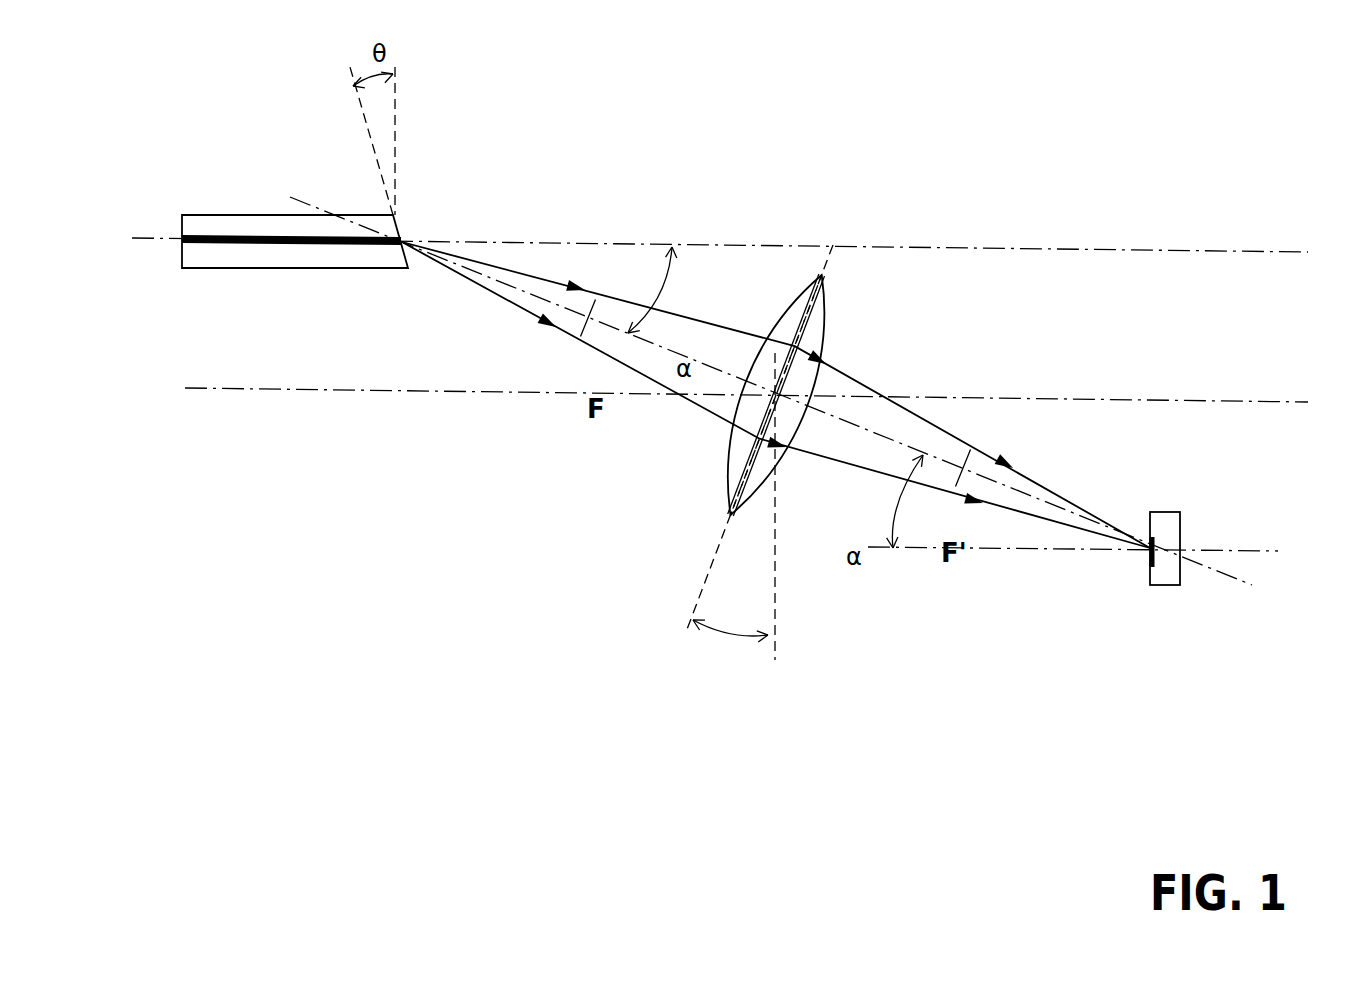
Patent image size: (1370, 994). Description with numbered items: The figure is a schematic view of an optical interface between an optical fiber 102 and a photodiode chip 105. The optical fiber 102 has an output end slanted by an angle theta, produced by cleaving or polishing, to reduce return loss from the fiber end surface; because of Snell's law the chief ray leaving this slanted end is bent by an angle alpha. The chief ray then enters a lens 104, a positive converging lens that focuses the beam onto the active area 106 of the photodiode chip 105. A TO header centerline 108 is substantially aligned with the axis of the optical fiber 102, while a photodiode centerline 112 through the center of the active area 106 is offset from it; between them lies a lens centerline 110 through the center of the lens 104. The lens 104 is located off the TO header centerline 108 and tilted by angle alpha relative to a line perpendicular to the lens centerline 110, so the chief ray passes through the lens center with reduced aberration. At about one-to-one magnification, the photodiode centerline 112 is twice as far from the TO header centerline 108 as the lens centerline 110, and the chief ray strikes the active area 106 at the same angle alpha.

The optical fiber 102 is at (230, 213).
The lens 104 is at (827, 322).
The photodiode chip 105 is at (1162, 587).
The active area 106 is at (1143, 555).
The TO header centerline 108 is at (1258, 250).
The lens centerline 110 is at (1258, 400).
The photodiode centerline 112 is at (1248, 546).